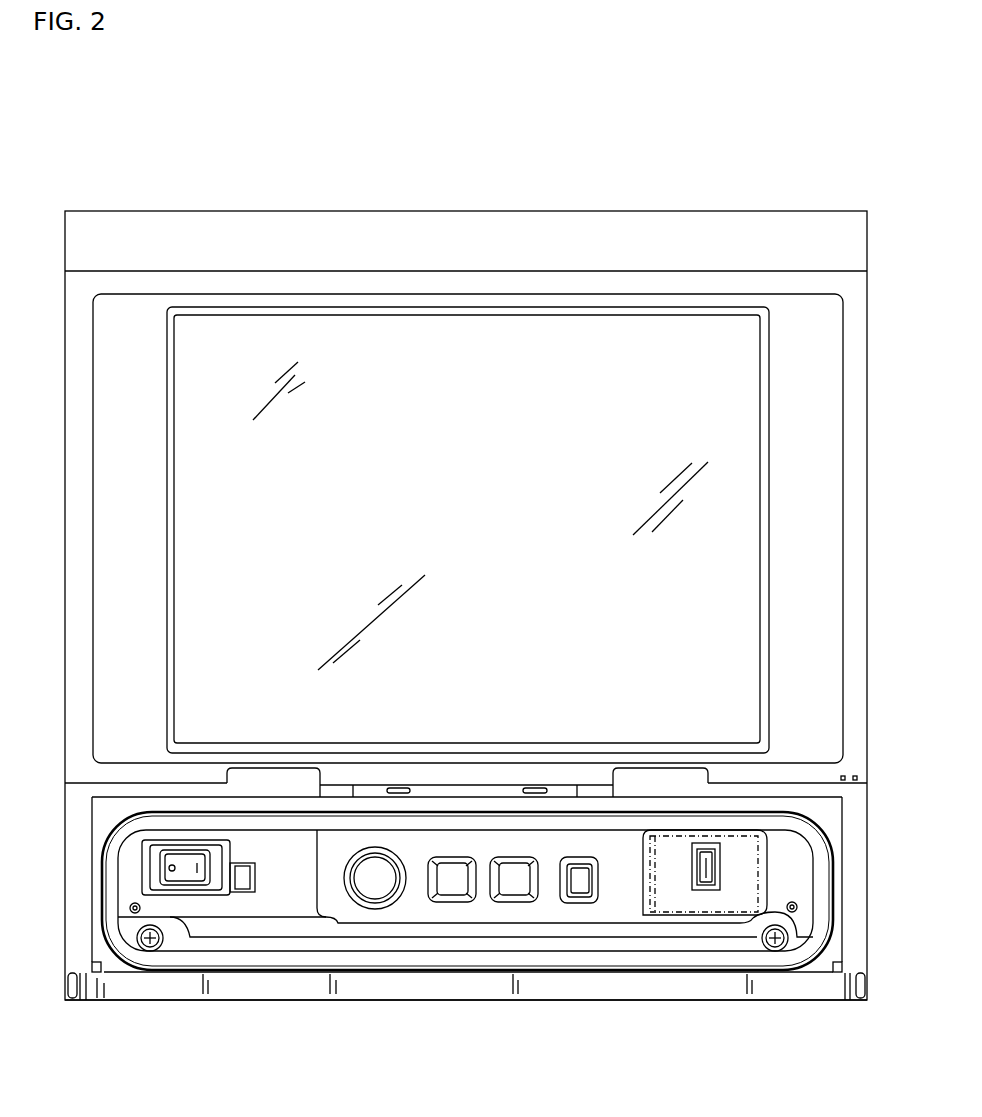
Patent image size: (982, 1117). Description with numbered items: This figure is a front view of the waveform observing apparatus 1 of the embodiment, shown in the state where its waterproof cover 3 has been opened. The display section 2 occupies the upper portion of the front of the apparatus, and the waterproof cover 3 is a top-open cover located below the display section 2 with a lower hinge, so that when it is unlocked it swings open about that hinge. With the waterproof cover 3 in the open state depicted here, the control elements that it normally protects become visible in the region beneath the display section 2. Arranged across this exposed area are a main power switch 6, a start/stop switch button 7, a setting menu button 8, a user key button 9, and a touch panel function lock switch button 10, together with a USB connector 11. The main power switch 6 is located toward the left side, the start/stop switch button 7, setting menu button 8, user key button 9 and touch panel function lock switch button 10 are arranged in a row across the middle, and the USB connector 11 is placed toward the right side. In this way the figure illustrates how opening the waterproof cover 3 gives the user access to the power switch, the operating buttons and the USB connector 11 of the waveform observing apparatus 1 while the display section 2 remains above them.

The waveform observing apparatus 1 is at (630, 184).
The display section 2 is at (667, 421).
The waterproof cover 3 is at (143, 982).
The main power switch 6 is at (182, 873).
The start/stop switch button 7 is at (378, 885).
The setting menu button 8 is at (455, 881).
The user key button 9 is at (513, 887).
The touch panel function lock switch button 10 is at (578, 893).
The USB connector 11 is at (707, 882).